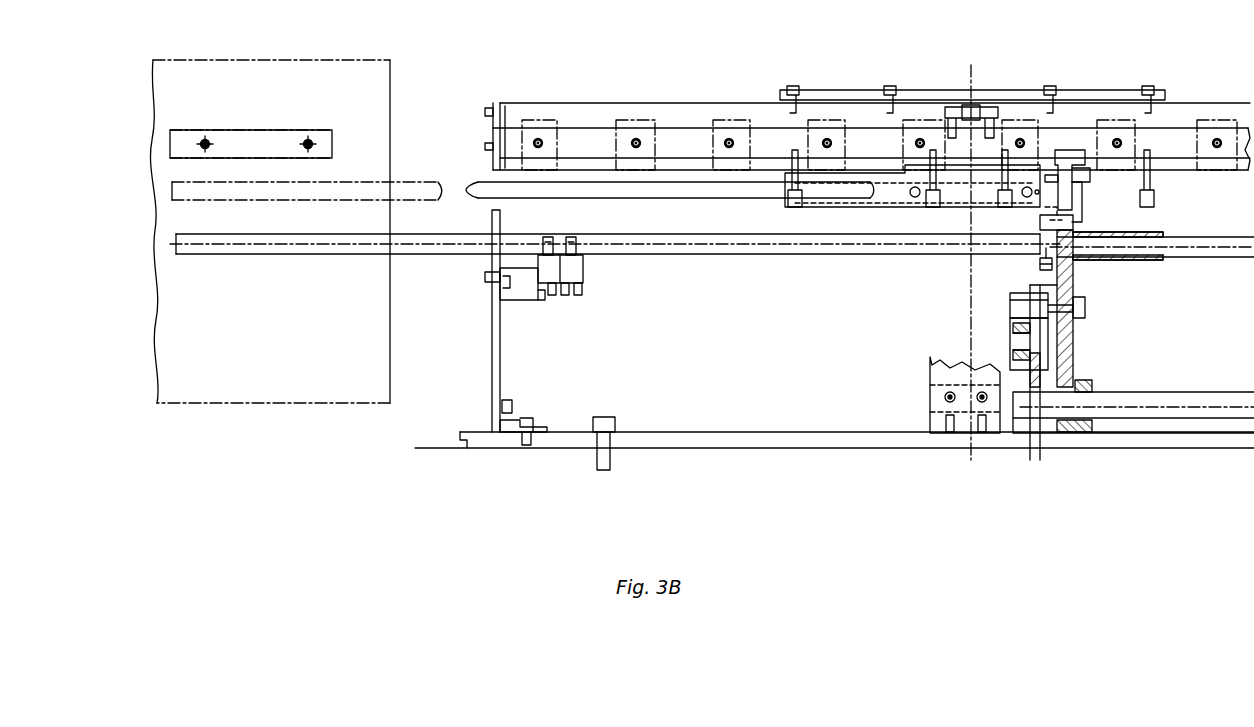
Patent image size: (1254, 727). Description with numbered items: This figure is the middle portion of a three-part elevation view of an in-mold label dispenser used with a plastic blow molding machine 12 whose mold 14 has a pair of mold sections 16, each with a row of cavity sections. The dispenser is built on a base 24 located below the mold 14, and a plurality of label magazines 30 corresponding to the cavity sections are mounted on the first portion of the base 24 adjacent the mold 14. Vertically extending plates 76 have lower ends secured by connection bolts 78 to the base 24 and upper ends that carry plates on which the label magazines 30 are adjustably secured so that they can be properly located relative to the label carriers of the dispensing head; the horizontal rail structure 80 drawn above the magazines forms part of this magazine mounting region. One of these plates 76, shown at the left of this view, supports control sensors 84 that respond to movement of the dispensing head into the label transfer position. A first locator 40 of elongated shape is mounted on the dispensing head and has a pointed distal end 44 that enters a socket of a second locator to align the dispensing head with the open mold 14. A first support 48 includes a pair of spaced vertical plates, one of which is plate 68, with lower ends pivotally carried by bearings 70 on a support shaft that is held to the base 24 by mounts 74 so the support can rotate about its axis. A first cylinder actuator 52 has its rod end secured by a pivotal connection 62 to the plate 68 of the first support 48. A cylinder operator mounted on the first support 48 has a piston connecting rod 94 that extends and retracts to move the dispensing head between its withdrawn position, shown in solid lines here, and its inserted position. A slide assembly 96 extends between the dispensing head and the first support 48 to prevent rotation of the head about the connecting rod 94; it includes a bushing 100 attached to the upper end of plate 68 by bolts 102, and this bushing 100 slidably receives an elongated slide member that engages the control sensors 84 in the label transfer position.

The plastic blow molding machine 12 is at (407, 25).
The mold 14 is at (393, 58).
The mold section 16 is at (352, 68).
The base 24 is at (825, 450).
The label magazine 30 is at (545, 120).
The first locator 40 is at (768, 238).
The distal end 44 is at (470, 200).
The first support 48 is at (1048, 290).
The first actuator 52 is at (1000, 338).
The pivotal connection 62 is at (1075, 316).
The plate 68 is at (1068, 282).
The bearing 70 is at (1092, 382).
The mount 74 is at (1062, 432).
The plate 76 is at (500, 346).
The connection bolt 78 is at (533, 420).
The rail 80 is at (600, 108).
The control sensor 84 is at (583, 273).
The piston connecting rod 94 is at (1083, 190).
The slide assembly 96 is at (1170, 268).
The bushing 100 is at (1175, 250).
The bolt 102 is at (1038, 268).